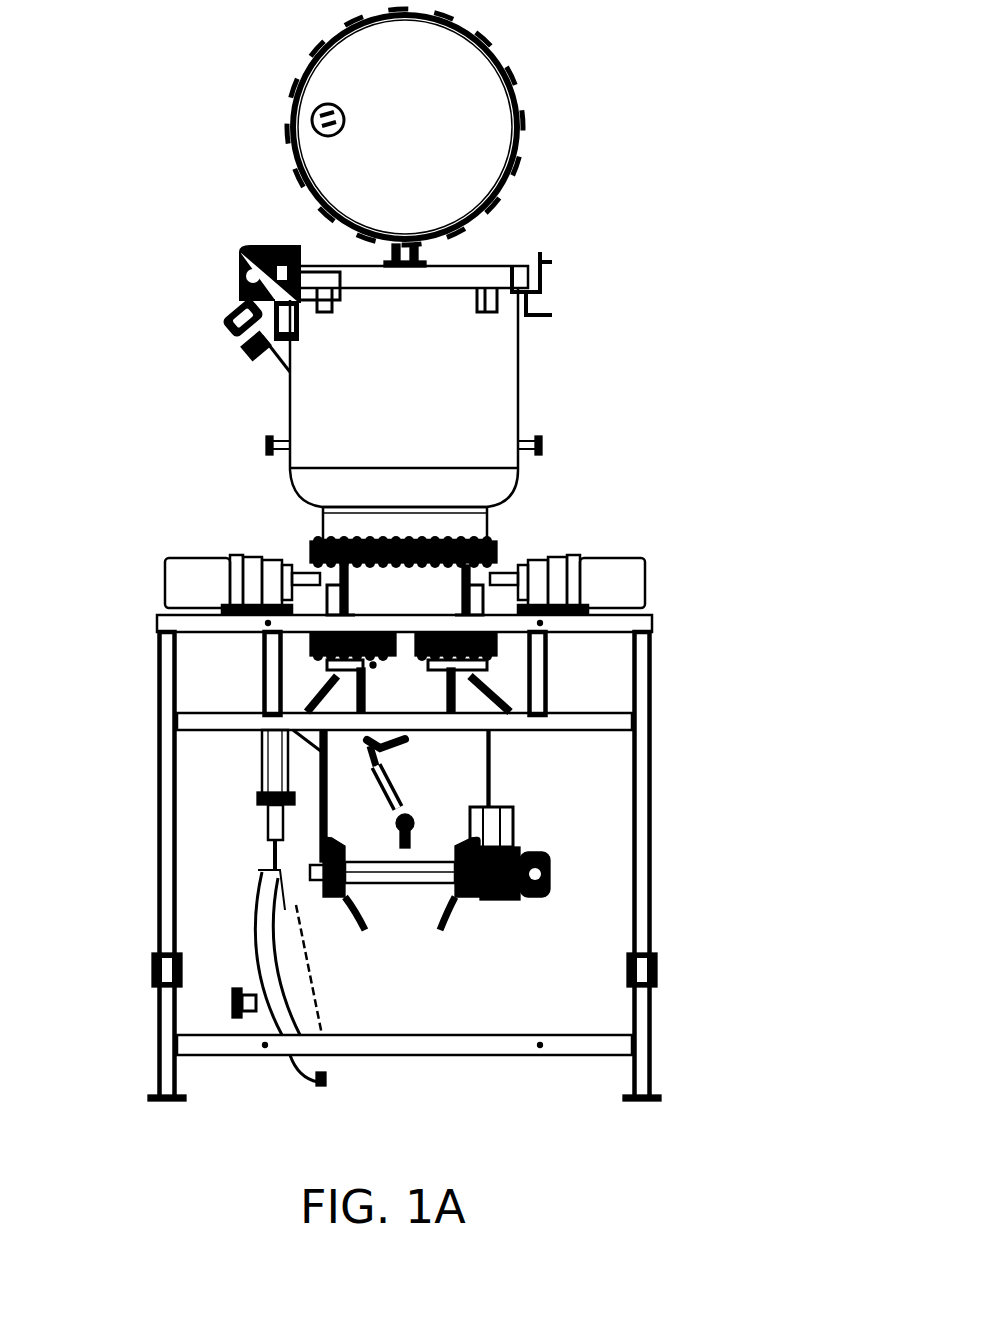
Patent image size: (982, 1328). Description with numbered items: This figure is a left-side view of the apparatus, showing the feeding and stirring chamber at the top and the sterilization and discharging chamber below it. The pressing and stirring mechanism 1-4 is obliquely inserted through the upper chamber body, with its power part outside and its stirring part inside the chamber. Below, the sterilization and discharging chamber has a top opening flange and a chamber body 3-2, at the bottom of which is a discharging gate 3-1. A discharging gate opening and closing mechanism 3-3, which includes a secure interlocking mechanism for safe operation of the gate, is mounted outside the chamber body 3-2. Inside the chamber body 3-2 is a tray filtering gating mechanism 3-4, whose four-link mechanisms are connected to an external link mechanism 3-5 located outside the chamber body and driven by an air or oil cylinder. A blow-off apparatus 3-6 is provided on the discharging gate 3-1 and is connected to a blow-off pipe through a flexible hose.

The pressing and stirring mechanism 1-4 is at (237, 325).
The discharging gate 3-1 is at (287, 963).
The chamber body 3-2 is at (350, 820).
The discharging gate opening and closing mechanism 3-3 is at (273, 768).
The tray filtering gating mechanism 3-4 is at (460, 913).
The external link mechanism 3-5 is at (405, 737).
The blow-off apparatus 3-6 is at (233, 1010).